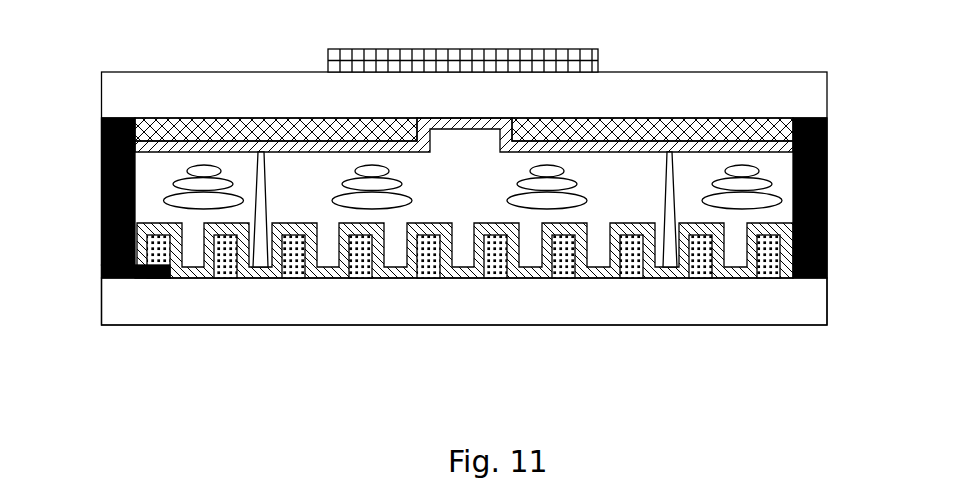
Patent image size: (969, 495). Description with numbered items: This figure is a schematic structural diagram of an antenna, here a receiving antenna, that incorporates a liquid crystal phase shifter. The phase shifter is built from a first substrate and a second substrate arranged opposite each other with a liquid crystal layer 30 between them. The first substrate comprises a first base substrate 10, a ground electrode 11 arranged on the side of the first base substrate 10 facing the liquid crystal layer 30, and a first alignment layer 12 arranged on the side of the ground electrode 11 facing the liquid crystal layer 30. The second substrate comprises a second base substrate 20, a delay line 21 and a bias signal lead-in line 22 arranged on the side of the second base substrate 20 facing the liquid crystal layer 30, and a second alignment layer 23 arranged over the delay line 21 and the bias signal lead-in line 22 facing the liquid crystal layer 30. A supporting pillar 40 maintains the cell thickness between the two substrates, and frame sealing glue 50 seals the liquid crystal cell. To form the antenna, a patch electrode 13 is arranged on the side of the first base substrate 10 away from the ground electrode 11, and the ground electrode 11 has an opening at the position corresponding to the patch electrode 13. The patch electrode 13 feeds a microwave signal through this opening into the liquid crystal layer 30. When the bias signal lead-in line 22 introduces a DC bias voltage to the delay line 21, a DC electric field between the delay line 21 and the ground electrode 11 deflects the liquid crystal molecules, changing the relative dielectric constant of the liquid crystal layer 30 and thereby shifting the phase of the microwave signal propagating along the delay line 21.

The first base substrate 10 is at (133, 88).
The ground electrode 11 is at (155, 129).
The first alignment layer 12 is at (148, 149).
The patch electrode 13 is at (533, 48).
The second base substrate 20 is at (780, 312).
The delay line 21 is at (767, 265).
The bias signal lead-in line 22 is at (110, 278).
The second alignment layer 23 is at (768, 229).
The liquid crystal layer 30 is at (162, 180).
The supporting pillar 40 is at (667, 255).
The frame sealing glue 50 is at (803, 189).